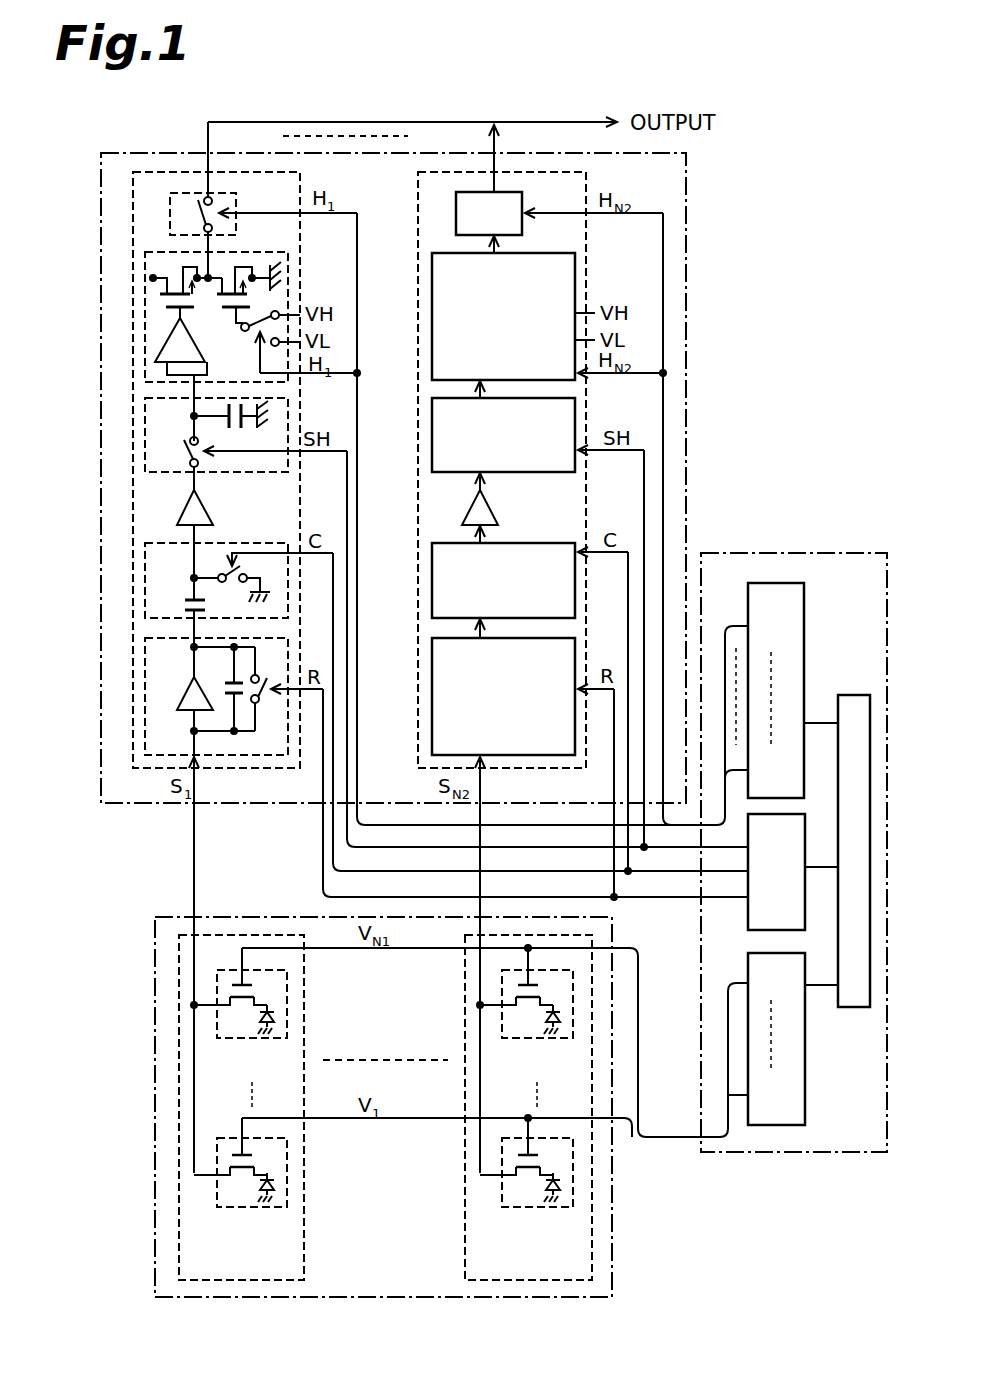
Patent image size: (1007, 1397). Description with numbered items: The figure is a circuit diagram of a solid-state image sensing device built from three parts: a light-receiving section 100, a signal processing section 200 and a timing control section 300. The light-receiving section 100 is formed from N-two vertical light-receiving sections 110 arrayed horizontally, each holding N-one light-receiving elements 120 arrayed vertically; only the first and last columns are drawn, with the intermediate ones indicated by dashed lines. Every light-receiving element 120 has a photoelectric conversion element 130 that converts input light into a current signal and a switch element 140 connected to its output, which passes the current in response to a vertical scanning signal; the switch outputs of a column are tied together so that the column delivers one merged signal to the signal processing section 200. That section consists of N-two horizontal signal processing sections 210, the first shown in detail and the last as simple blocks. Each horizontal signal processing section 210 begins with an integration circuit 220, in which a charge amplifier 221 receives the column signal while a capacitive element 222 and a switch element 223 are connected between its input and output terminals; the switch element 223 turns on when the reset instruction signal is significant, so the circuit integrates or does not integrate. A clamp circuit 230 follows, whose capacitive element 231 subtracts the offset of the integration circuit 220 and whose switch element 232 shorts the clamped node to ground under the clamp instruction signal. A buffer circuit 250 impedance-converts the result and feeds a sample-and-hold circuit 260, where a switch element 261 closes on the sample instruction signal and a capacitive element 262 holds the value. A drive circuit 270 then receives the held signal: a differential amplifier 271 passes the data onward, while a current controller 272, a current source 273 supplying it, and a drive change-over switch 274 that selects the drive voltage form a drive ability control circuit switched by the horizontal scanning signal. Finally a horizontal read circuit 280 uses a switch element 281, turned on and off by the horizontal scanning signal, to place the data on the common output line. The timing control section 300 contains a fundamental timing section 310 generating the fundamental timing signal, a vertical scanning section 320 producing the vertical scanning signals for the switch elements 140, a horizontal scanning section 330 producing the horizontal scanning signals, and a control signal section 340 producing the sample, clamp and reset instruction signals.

The light-receiving section 100 is at (612, 1268).
The vertical light-receiving section 110 is at (304, 1237).
The light-receiving element 120 is at (385, 1102).
The photoelectric conversion element 130 is at (274, 1018).
The switch element 140 is at (245, 981).
The signal processing section 200 is at (688, 240).
The horizontal signal processing section 210 is at (283, 185).
The integration circuit 220 is at (146, 703).
The charge amplifier 221 is at (184, 693).
The capacitive element 222 is at (225, 695).
The switch element 223 is at (262, 703).
The clamp circuit 230 is at (146, 567).
The capacitive element 231 is at (185, 598).
The switch element 232 is at (228, 568).
The buffer circuit 250 is at (187, 505).
The sample-and-hold circuit 260 is at (146, 440).
The switch element 261 is at (187, 452).
The capacitive element 262 is at (247, 425).
The drive circuit 270 is at (146, 340).
The differential amplifier 271 is at (187, 330).
The current controller 272 is at (158, 318).
The current source 273 is at (248, 293).
The drive change-over switch 274 is at (249, 322).
The horizontal read circuit 280 is at (170, 213).
The switch element 281 is at (214, 206).
The timing control section 300 is at (775, 553).
The fundamental timing section 310 is at (850, 1007).
The vertical scanning section 320 is at (805, 1078).
The horizontal scanning section 330 is at (804, 595).
The control signal section 340 is at (748, 912).